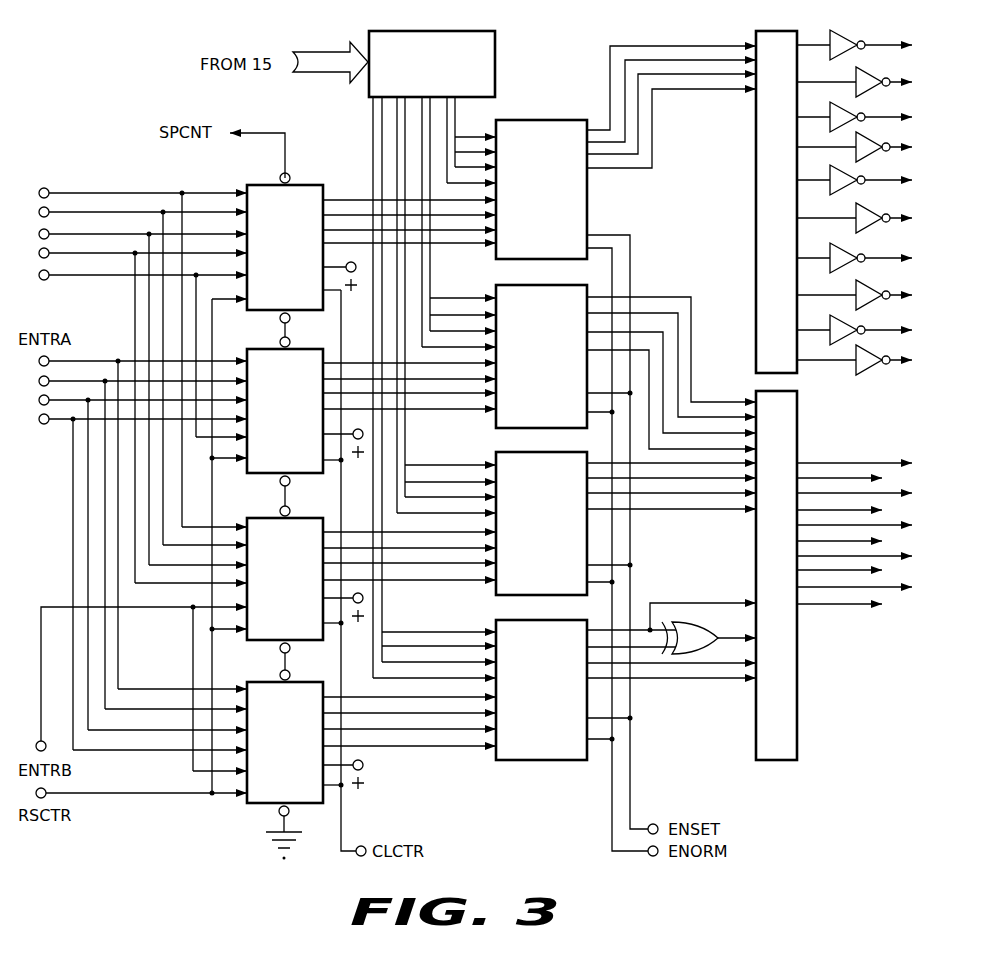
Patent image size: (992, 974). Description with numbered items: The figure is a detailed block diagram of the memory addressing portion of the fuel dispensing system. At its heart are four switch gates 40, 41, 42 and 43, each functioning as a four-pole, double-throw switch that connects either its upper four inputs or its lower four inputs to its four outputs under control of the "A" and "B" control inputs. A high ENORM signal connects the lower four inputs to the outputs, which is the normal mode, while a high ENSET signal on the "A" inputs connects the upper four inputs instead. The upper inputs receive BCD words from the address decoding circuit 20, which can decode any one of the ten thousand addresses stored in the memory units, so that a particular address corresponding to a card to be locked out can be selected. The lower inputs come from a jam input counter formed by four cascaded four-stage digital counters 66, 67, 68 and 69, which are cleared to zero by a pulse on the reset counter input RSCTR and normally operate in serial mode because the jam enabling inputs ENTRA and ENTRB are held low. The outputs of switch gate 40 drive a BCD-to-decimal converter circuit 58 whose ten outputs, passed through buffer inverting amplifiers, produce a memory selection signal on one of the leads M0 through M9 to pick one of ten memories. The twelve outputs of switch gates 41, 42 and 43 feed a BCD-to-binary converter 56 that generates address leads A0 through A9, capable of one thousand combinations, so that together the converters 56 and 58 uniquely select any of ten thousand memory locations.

The address decoding circuit 20 is at (496, 50).
The switch gate 40 is at (553, 120).
The switch gate 41 is at (540, 285).
The switch gate 42 is at (545, 452).
The switch gate 43 is at (540, 620).
The BCD-to-binary converter 56 is at (756, 563).
The BCD-to-decimal converter circuit 58 is at (756, 144).
The digital counter 66 is at (297, 681).
The digital counter 67 is at (297, 517).
The digital counter 68 is at (297, 348).
The digital counter 69 is at (297, 184).